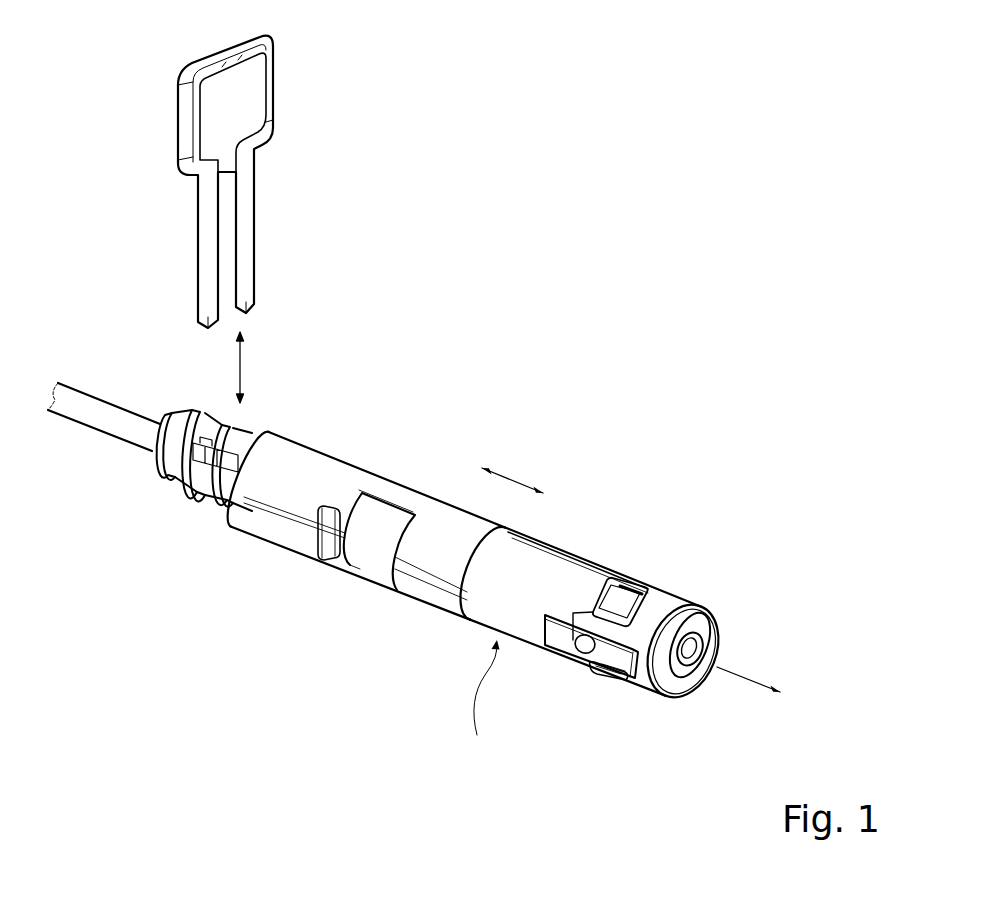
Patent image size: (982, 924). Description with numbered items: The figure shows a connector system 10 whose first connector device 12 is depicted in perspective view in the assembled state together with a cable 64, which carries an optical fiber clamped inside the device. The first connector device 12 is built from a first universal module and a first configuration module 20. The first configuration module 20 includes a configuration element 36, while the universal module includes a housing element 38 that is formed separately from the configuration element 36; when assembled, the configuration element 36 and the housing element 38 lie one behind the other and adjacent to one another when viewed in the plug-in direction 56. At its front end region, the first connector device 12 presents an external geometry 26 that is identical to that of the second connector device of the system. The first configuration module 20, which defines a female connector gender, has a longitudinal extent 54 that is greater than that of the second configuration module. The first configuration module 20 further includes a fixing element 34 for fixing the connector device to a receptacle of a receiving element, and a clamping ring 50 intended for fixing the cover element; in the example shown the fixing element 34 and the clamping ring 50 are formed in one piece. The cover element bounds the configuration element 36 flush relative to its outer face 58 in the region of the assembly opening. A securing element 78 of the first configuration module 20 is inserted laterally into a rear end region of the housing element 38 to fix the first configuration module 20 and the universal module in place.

The connector system 10 is at (615, 411).
The first connector device 12 is at (478, 703).
The first configuration module 20 is at (455, 535).
The external geometry 26 is at (727, 605).
The fixing element 34 is at (633, 682).
The configuration element 36 is at (515, 598).
The housing element 38 is at (437, 598).
The clamping ring 50 is at (647, 608).
The longitudinal extent 54 is at (517, 482).
The plug-in direction 56 is at (747, 680).
The outer face 58 is at (549, 583).
The cable 64 is at (105, 418).
The securing element 78 is at (185, 135).